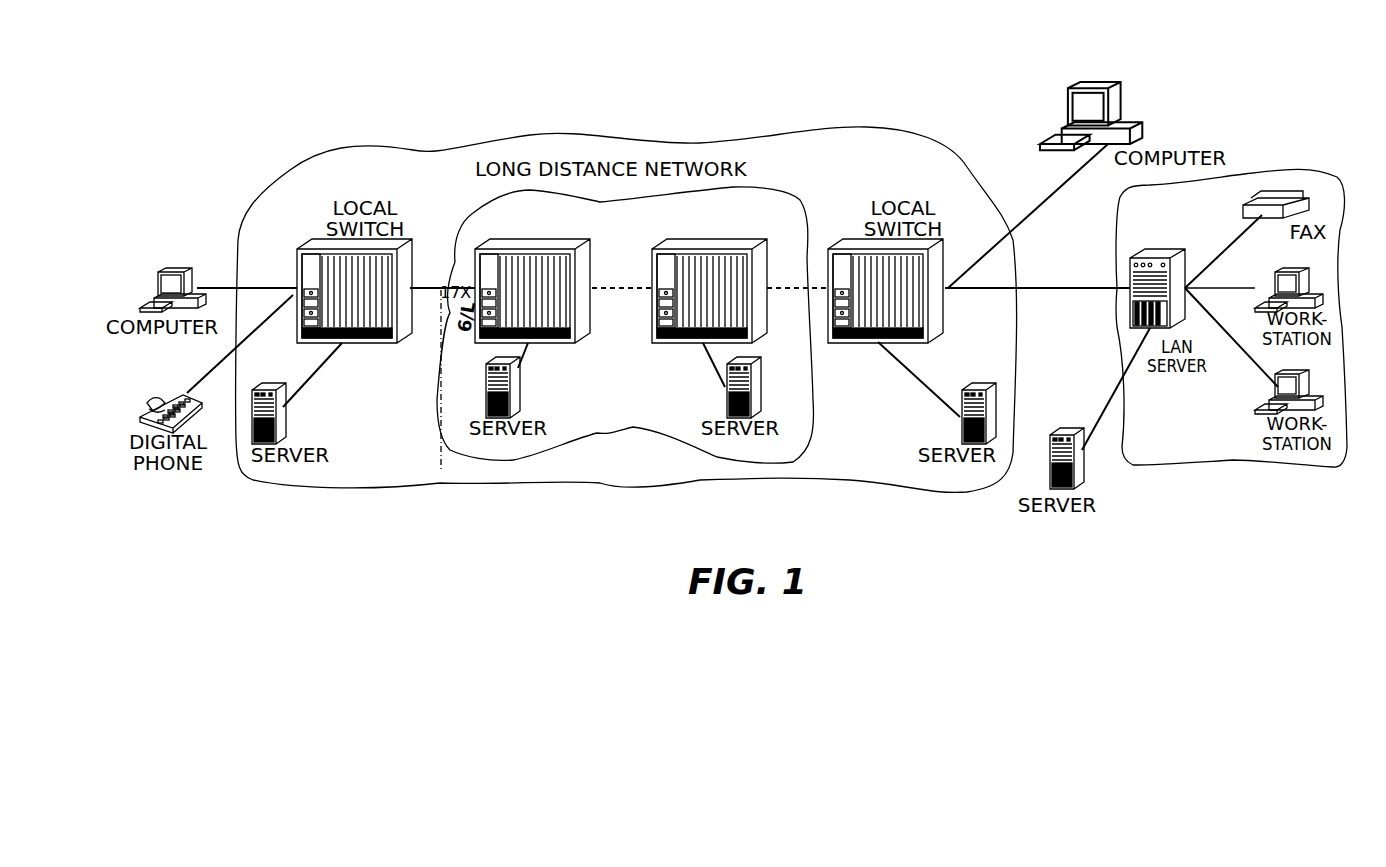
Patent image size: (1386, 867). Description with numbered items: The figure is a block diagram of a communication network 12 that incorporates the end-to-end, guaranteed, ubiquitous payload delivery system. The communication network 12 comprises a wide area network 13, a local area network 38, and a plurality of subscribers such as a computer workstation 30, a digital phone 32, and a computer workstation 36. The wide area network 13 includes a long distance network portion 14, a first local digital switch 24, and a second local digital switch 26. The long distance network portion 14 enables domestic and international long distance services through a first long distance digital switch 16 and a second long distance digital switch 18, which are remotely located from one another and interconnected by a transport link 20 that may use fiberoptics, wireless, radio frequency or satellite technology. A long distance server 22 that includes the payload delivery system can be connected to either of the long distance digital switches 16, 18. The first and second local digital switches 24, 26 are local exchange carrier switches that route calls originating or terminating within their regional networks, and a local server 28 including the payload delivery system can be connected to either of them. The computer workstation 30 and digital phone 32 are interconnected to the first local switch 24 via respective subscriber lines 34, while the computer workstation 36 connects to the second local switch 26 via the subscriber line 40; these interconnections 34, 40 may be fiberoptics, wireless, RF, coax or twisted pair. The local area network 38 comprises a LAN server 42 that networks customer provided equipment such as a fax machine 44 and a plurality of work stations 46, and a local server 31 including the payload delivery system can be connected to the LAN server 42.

The communication network 12 is at (272, 118).
The wide area network 13 is at (932, 150).
The long distance network portion 14 is at (805, 198).
The first long distance digital switch 16 is at (550, 345).
The second long distance digital switch 18 is at (675, 346).
The transport link 20 is at (628, 286).
The long distance server 22 is at (520, 392).
The first local digital switch 24 is at (370, 346).
The second local digital switch 26 is at (858, 346).
The local server 28 is at (287, 420).
The computer workstation 30 is at (158, 278).
The local server 31 is at (1072, 433).
The digital phone 32 is at (138, 418).
The subscriber lines 34 is at (215, 287).
The computer workstation 36 is at (1110, 80).
The local area network 38 is at (1242, 462).
The subscriber line 40 is at (1032, 203).
The LAN server 42 is at (1162, 258).
The fax machine 44 is at (1310, 202).
The work stations 46 is at (1322, 295).